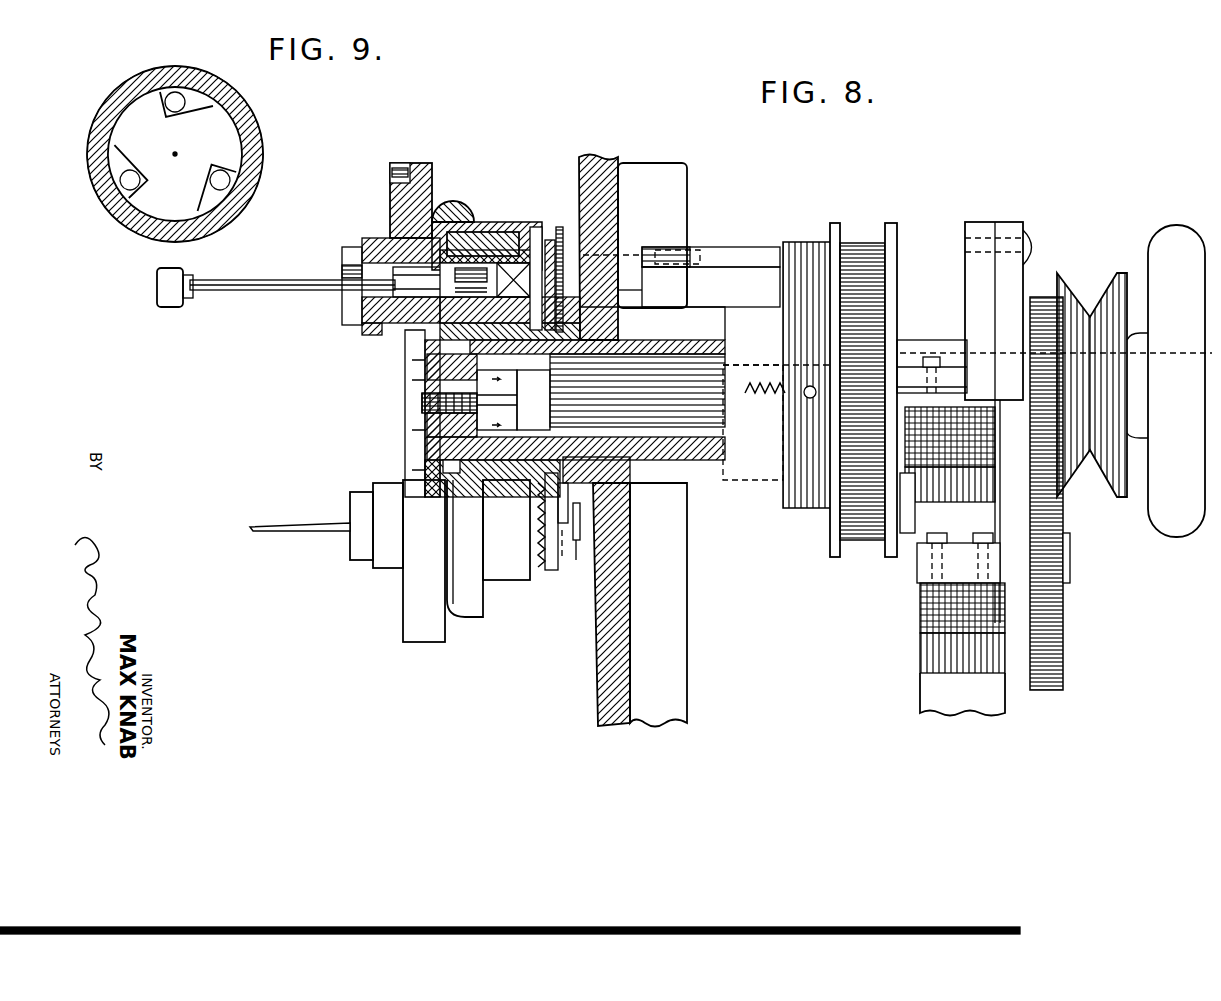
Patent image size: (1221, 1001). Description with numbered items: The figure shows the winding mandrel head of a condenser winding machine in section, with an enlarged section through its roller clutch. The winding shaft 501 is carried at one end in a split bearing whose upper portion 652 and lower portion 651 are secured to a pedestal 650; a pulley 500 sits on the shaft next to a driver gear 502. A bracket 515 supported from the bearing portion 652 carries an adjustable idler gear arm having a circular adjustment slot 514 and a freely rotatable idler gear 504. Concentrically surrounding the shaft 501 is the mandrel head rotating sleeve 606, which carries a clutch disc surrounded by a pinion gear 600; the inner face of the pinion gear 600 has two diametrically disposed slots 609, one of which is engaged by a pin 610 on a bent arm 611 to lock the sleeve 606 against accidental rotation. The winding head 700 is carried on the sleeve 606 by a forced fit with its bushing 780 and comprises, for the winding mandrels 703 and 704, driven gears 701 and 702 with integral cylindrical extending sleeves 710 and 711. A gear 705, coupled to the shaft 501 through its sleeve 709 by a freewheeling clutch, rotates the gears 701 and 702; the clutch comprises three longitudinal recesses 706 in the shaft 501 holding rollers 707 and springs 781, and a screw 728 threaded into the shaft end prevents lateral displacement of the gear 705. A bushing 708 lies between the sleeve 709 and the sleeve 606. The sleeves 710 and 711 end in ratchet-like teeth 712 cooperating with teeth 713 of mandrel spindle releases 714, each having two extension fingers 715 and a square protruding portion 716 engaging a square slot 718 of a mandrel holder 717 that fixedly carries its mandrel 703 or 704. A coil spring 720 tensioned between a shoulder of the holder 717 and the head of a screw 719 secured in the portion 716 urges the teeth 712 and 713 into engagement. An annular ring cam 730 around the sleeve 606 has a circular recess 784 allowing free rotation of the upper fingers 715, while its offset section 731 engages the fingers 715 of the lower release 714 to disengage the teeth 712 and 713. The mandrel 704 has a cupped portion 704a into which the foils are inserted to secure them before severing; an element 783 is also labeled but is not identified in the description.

In FIG. 8, the pulley 500 is at (1067, 297).
In FIG. 9, the winding shaft 501 is at (220, 126).
In FIG. 8, the winding shaft 501 is at (700, 343).
In FIG. 8, the driver gear 502 is at (1036, 300).
In FIG. 8, the idler gear 504 is at (1067, 513).
In FIG. 8, the circular adjustment slot 514 is at (992, 243).
In FIG. 8, the bracket 515 is at (965, 222).
In FIG. 8, the pinion gear 600 is at (853, 243).
In FIG. 8, the mandrel head rotating sleeve 606 is at (676, 440).
In FIG. 8, the slots 609 is at (837, 513).
In FIG. 8, the pin 610 is at (822, 417).
In FIG. 8, the bent arm 611 is at (734, 245).
In FIG. 8, the pedestal 650 is at (920, 657).
In FIG. 8, the lower portion of split bearing 651 is at (937, 510).
In FIG. 8, the upper portion of split bearing 652 is at (918, 338).
In FIG. 8, the winding head 700 is at (460, 620).
In FIG. 8, the driven gear 701 is at (440, 167).
In FIG. 8, the driven gear 702 is at (398, 478).
In FIG. 8, the winding mandrel 703 is at (243, 279).
In FIG. 8, the winding mandrel 704 is at (275, 532).
In FIG. 8, the cupped portion 704a is at (166, 308).
In FIG. 8, the gear 705 is at (413, 368).
In FIG. 9, the longitudinal recesses 706 is at (187, 103).
In FIG. 8, the longitudinal recesses 706 is at (413, 383).
In FIG. 9, the rollers 707 is at (170, 95).
In FIG. 8, the rollers 707 is at (423, 397).
In FIG. 8, the bushing 708 is at (398, 452).
In FIG. 9, the sleeve 709 is at (150, 233).
In FIG. 8, the sleeve 709 is at (402, 350).
In FIG. 8, the cylindrical extending sleeve 710 is at (472, 205).
In FIG. 8, the cylindrical extending sleeve 711 is at (463, 493).
In FIG. 8, the ratchet-like teeth 712 is at (537, 227).
In FIG. 8, the teeth 713 is at (548, 263).
In FIG. 8, the mandrel spindle release 714 is at (553, 167).
In FIG. 8, the extension fingers 715 is at (597, 163).
In FIG. 8, the square protruding portion 716 is at (512, 267).
In FIG. 8, the mandrel holder 717 is at (363, 240).
In FIG. 8, the square slot 718 is at (508, 225).
In FIG. 8, the screw 719 is at (357, 294).
In FIG. 8, the coil spring 720 is at (477, 232).
In FIG. 8, the screw 728 is at (408, 415).
In FIG. 8, the annular ring cam 730 is at (688, 300).
In FIG. 8, the offset section 731 is at (562, 533).
In FIG. 8, the bushing 780 is at (440, 482).
In FIG. 9, the springs 781 is at (152, 80).
In FIG. 8, the nut 783 is at (372, 320).
In FIG. 8, the circular recess 784 is at (620, 296).